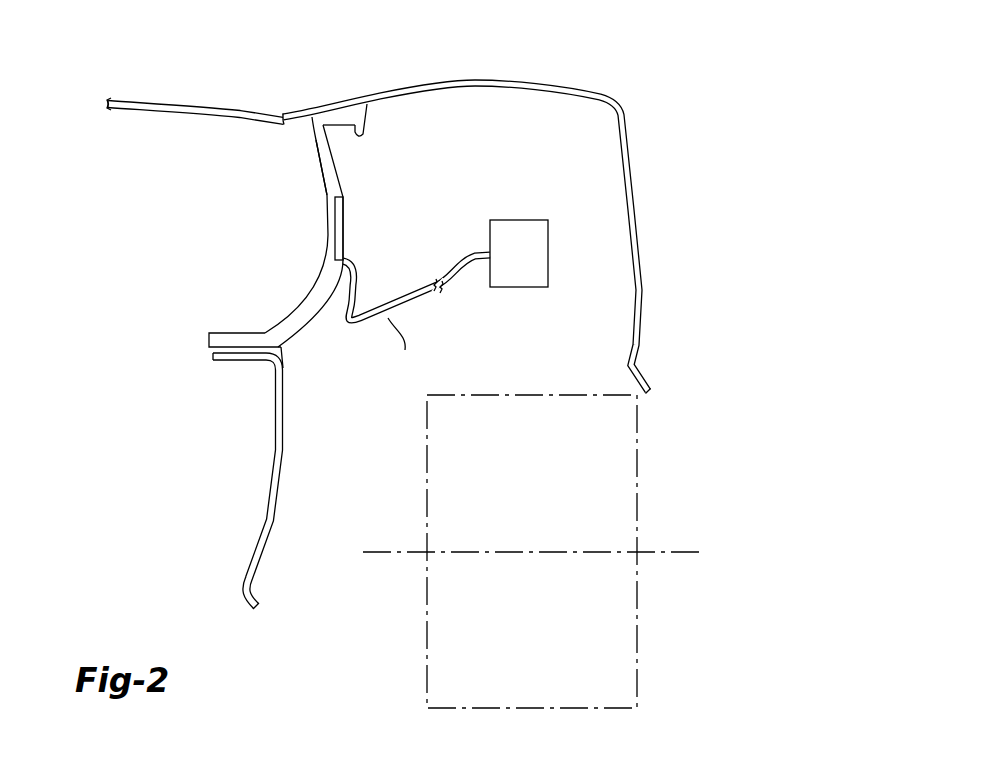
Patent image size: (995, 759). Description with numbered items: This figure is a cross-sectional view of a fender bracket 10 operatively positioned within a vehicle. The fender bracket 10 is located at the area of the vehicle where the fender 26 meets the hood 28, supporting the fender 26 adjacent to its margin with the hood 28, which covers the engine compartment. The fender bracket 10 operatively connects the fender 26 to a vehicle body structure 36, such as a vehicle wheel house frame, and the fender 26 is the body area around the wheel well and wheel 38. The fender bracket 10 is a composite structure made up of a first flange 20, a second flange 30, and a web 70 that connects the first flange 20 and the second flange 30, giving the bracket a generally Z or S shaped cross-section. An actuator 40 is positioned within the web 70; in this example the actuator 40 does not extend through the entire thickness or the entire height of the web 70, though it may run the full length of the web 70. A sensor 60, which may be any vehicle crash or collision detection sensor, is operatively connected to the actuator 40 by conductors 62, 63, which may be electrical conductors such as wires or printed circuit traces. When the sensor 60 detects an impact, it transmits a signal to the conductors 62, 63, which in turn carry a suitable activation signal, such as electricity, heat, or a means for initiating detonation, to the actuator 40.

The fender bracket 10 is at (356, 171).
The first flange 20 is at (362, 125).
The fender 26 is at (575, 82).
The hood 28 is at (205, 112).
The second flange 30 is at (230, 331).
The vehicle body structure 36 is at (285, 400).
The wheel 38 is at (535, 422).
The actuator 40 is at (358, 221).
The sensor 60 is at (507, 258).
The conductor 62 is at (383, 302).
The conductor 63 is at (403, 348).
The web 70 is at (323, 160).